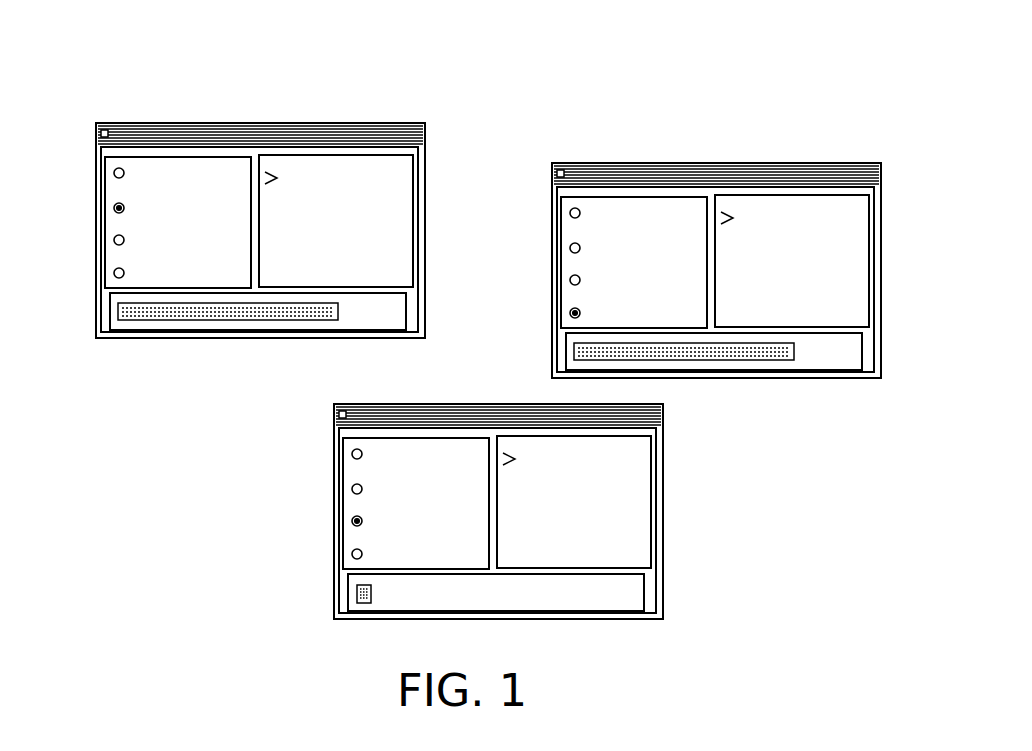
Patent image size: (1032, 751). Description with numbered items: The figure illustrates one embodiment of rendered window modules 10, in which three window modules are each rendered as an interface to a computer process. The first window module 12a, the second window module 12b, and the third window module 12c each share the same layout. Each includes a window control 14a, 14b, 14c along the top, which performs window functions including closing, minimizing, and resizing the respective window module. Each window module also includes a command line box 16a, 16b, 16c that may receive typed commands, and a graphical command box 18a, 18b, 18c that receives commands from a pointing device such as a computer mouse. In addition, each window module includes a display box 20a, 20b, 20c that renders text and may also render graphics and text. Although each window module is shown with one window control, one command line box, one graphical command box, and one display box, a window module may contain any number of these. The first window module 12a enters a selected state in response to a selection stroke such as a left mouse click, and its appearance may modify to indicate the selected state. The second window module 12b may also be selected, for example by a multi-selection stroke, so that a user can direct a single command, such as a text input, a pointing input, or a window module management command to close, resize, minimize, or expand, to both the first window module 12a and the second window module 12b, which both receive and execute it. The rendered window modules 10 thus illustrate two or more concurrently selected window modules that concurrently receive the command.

The rendered window modules 10 is at (109, 43).
The first window module 12a is at (97, 125).
The window control 14a is at (113, 128).
The command line box 16a is at (414, 156).
The graphical command box 18a is at (103, 197).
The display box 20a is at (110, 304).
The second window module 12b is at (553, 165).
The window control 14b is at (569, 168).
The command line box 16b is at (870, 196).
The graphical command box 18b is at (559, 237).
The display box 20b is at (566, 344).
The third window module 12c is at (335, 406).
The window control 14c is at (351, 409).
The command line box 16c is at (652, 437).
The graphical command box 18c is at (341, 478).
The display box 20c is at (348, 585).